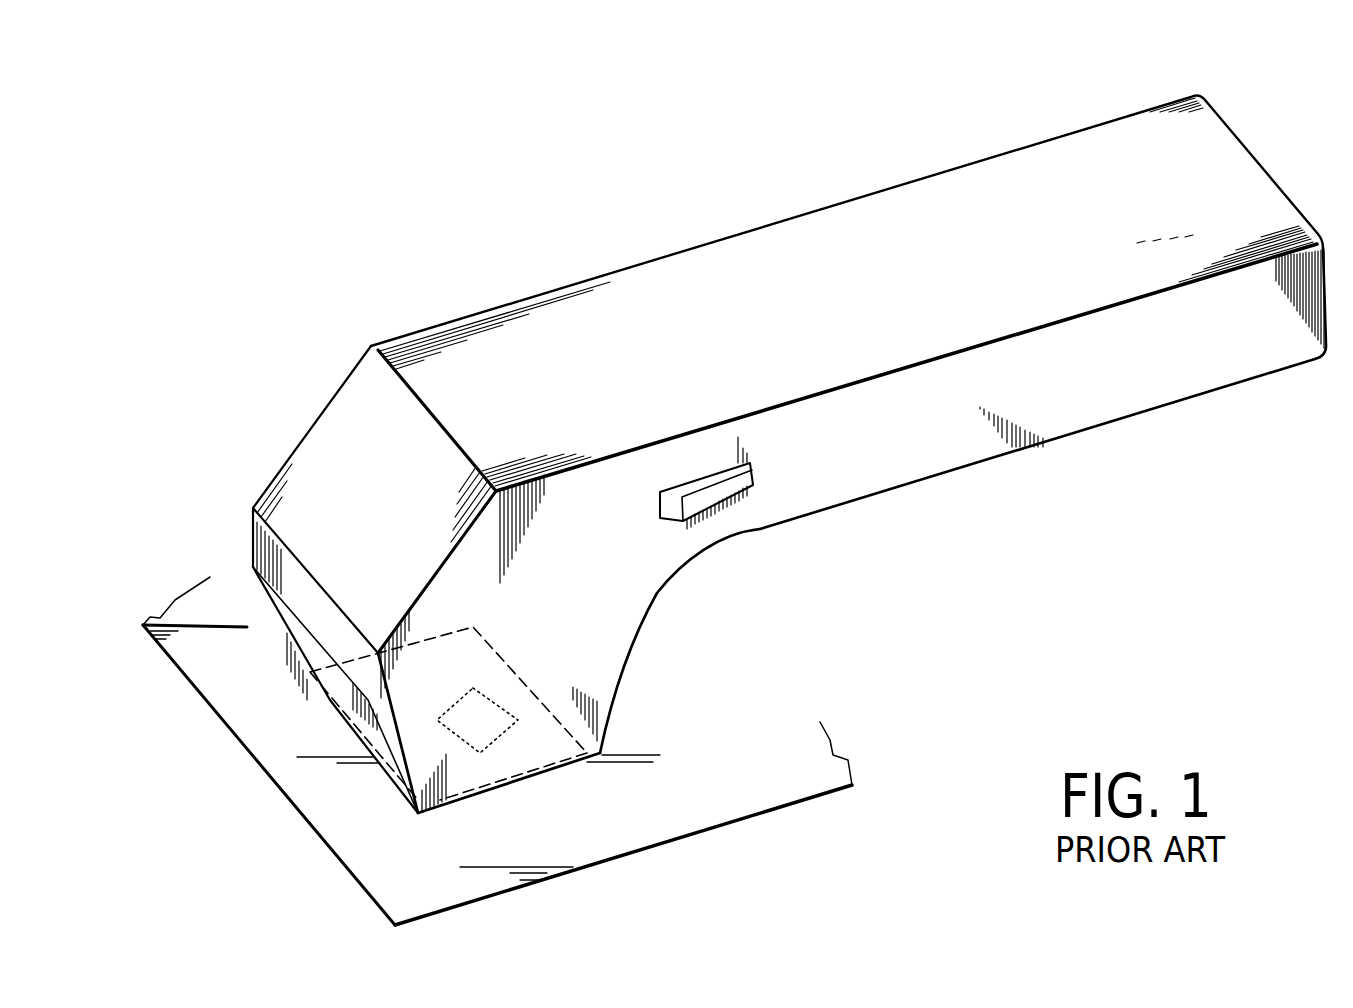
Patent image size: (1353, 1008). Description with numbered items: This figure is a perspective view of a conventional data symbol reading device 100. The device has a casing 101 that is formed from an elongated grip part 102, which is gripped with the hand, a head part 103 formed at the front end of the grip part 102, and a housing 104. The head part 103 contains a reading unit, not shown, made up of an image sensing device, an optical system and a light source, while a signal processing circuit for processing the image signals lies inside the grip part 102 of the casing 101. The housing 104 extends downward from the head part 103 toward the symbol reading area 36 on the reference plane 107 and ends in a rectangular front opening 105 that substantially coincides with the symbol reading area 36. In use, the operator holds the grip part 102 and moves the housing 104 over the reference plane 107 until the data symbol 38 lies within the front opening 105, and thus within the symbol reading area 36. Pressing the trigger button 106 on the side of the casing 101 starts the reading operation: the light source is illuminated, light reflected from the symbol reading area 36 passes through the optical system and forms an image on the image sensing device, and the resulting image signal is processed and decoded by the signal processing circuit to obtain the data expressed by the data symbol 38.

The data symbol reading device 100 is at (625, 214).
The casing 101 is at (847, 240).
The grip part 102 is at (1128, 160).
The head part 103 is at (334, 444).
The housing 104 is at (593, 633).
The front opening 105 is at (457, 768).
The trigger button 106 is at (700, 500).
The reference plane 107 is at (717, 807).
The symbol reading area 36 is at (357, 715).
The data symbol 38 is at (500, 733).